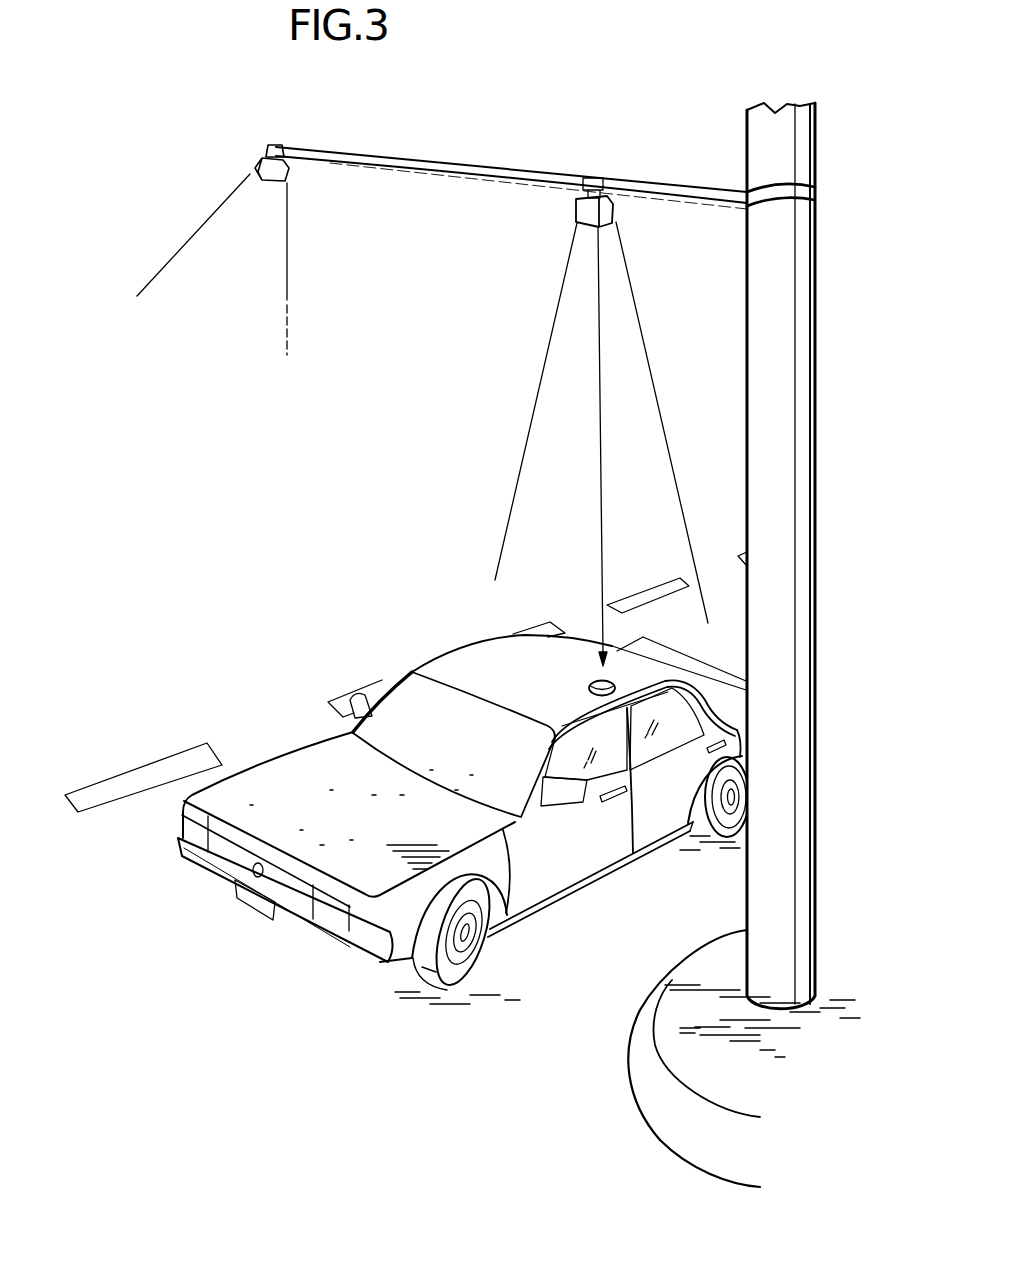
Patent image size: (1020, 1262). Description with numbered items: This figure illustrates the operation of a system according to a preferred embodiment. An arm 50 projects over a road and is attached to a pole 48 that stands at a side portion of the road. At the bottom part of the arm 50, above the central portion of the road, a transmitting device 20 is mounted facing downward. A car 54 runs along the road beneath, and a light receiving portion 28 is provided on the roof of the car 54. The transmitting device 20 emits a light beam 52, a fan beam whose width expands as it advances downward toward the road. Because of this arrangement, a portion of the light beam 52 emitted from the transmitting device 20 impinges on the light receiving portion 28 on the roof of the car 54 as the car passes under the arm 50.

The pole 48 is at (815, 142).
The arm 50 is at (627, 188).
The transmitting device 20 is at (611, 210).
The light beam 52 is at (653, 386).
The light receiving portion 28 is at (607, 679).
The car 54 is at (286, 748).